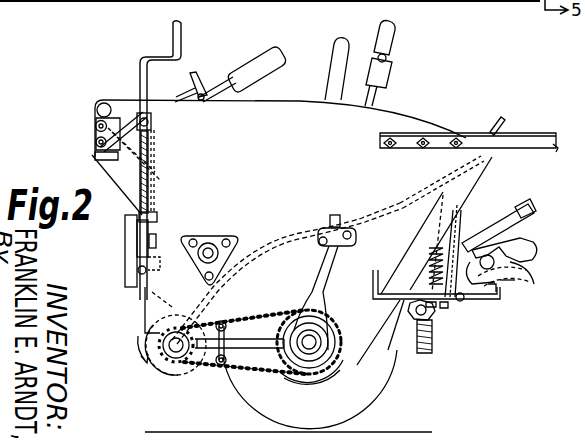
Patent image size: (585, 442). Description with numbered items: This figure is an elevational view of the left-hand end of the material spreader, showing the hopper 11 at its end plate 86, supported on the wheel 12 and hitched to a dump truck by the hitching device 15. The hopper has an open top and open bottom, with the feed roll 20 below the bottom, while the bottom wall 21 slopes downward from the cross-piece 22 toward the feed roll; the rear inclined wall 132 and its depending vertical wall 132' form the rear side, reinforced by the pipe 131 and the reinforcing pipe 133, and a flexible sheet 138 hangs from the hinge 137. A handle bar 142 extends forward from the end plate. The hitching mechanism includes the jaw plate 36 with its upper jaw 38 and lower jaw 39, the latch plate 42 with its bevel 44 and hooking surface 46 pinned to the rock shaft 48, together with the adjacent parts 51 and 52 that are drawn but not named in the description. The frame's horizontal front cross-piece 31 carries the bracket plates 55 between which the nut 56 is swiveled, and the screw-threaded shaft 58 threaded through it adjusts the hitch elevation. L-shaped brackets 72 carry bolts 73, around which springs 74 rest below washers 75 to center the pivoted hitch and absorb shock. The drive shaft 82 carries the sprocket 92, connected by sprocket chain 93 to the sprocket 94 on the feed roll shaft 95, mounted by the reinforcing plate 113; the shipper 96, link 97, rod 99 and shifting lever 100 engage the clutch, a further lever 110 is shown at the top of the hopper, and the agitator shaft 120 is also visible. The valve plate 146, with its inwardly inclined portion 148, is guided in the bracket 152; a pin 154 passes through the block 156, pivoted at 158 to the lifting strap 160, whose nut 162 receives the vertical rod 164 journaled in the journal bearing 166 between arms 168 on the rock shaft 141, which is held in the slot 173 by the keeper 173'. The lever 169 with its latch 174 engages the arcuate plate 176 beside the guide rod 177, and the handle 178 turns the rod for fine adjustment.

The hopper 11 is at (293, 90).
The wheel 12 is at (377, 393).
The hitching device 15 is at (537, 251).
The feed roll 20 is at (160, 362).
The bottom wall 21 is at (283, 236).
The cross-piece 22 is at (440, 210).
The horizontal front cross-piece 31 is at (432, 290).
The jaw plate 36 is at (490, 295).
The upper jaw 38 is at (522, 239).
The lower jaw 39 is at (531, 270).
The latch plate 42 is at (523, 296).
The bevel 44 is at (532, 258).
The hooking surface 46 is at (483, 255).
The rock shaft 48 is at (462, 299).
The lug 51 is at (524, 208).
The frame member 52 is at (460, 225).
The bracket plate 55 is at (426, 314).
The nut 56 is at (410, 318).
The screw-threaded shaft 58 is at (423, 354).
The L-shaped bracket 72 is at (444, 307).
The bolt 73 is at (430, 305).
The spring 74 is at (430, 263).
The washer 75 is at (436, 252).
The shaft 82 is at (323, 340).
The hopper end plate 86 is at (279, 157).
The sprocket 92 is at (300, 378).
The sprocket chain 93 is at (253, 318).
The sprocket 94 is at (221, 366).
The feed roll shaft 95 is at (172, 370).
The shipper 96 is at (305, 317).
The link 97 is at (327, 285).
The rod 99 is at (338, 220).
The shifting lever 100 is at (377, 94).
The shift lever 110 is at (333, 78).
The reinforcing plate 113 is at (252, 352).
The agitator shaft 120 is at (209, 246).
The pipe 131 is at (97, 112).
The rear inclined wall 132 is at (150, 149).
The vertical wall 132' is at (161, 156).
The reinforcing pipe 133 is at (494, 158).
The hinge 137 is at (440, 195).
The flexible sheet 138 is at (497, 120).
The rock shaft 141 is at (95, 127).
The handle bar 142 is at (528, 141).
The valve plate 146 is at (142, 292).
The inwardly inclined portion 148 is at (150, 309).
The bracket 152 is at (126, 250).
The pin 154 is at (140, 272).
The block 156 is at (151, 241).
The pivot 158 is at (158, 265).
The lifting strap 160 is at (138, 230).
The nut 162 is at (152, 212).
The vertical rod 164 is at (153, 163).
The journal bearing 166 is at (141, 118).
The arm 168 is at (127, 121).
The lever 169 is at (243, 73).
The slot 173 is at (81, 138).
The keeper 173' is at (80, 166).
The latch 174 is at (199, 92).
The arcuate plate 176 is at (222, 90).
The guide rod 177 is at (190, 81).
The handle 178 is at (183, 24).